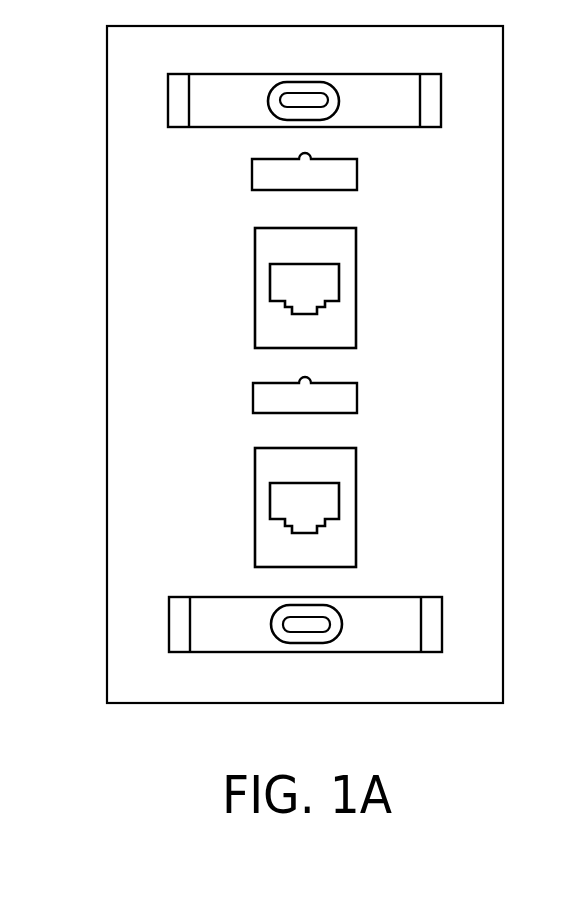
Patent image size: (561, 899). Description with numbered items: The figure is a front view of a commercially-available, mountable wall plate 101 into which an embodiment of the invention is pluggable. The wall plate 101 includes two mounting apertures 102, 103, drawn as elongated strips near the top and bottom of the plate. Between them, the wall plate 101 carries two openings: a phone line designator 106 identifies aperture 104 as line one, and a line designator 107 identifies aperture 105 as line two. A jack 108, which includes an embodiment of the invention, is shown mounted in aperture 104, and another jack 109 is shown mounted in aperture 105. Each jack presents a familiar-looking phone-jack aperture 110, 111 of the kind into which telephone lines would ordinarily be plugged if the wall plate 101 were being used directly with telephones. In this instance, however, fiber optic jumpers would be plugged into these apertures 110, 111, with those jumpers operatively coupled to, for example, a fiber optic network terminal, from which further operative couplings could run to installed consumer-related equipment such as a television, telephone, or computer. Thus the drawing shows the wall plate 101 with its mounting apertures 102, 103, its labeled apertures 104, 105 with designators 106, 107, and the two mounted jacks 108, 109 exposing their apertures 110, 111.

The wall plate 101 is at (107, 683).
The mounting aperture 102 is at (218, 93).
The mounting aperture 103 is at (220, 616).
The aperture 104 is at (264, 288).
The aperture 105 is at (264, 507).
The phone line designator 106 is at (271, 175).
The line designator 107 is at (272, 397).
The jack 108 is at (270, 244).
The jack 109 is at (272, 462).
The phone-jack aperture 110 is at (276, 281).
The phone-jack aperture 111 is at (278, 502).